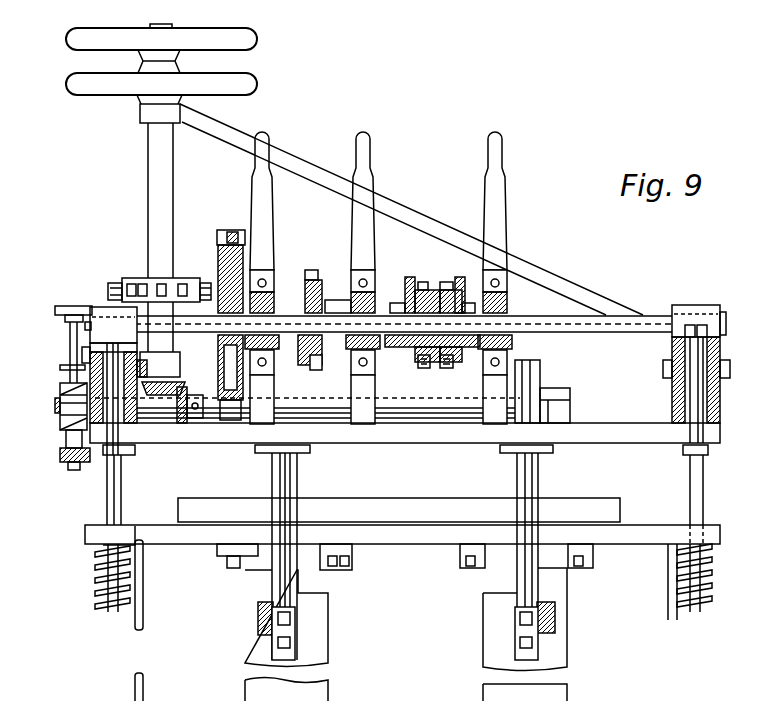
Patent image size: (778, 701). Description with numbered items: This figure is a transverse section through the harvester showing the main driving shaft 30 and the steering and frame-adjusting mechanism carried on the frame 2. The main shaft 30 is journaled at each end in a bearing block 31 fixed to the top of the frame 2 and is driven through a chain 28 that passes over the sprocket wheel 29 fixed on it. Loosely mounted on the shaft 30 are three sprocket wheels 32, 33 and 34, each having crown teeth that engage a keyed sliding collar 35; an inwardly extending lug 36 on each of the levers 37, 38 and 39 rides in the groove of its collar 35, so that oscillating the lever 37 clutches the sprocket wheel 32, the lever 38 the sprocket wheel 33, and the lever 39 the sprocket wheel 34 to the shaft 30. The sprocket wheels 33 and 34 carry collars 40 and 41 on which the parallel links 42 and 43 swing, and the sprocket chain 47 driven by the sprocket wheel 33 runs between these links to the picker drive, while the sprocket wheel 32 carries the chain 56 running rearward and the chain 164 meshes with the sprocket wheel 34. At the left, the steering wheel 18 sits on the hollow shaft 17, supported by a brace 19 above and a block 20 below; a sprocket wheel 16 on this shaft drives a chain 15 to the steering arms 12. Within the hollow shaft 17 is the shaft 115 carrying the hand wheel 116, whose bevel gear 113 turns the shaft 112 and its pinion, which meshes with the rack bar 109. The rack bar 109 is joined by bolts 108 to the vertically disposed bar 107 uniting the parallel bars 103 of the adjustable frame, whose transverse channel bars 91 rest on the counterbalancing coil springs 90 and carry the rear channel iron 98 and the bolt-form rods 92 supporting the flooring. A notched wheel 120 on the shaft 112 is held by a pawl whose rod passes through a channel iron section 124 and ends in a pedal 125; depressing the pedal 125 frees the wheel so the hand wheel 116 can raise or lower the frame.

The frame 2 is at (722, 403).
The arm 12 is at (405, 562).
The chain 15 is at (112, 282).
The sprocket wheel 16 is at (178, 278).
The hollow shaft 17 is at (147, 183).
The steering wheel 18 is at (258, 89).
The brace 19 is at (303, 159).
The block 20 is at (176, 357).
The chain 28 is at (221, 230).
The sprocket wheel 29 is at (218, 265).
The main shaft 30 is at (405, 337).
The bearing block 31 is at (691, 305).
The sprocket wheel 32 is at (333, 300).
The sprocket wheel 33 is at (422, 277).
The sprocket wheel 34 is at (452, 372).
The collar 35 is at (470, 288).
The lug 36 is at (542, 246).
The lever 37 is at (264, 197).
The lever 38 is at (357, 208).
The lever 39 is at (506, 205).
The collar 40 is at (398, 349).
The collar 41 is at (508, 352).
The parallel link 42 is at (455, 362).
The parallel link 43 is at (432, 329).
The sprocket chain 47 is at (431, 377).
The chain 56 is at (310, 272).
The coil spring 90 is at (95, 573).
The channel bar 91 is at (712, 527).
The rod 92 is at (143, 682).
The channel iron 98 is at (397, 507).
The parallel bar 103 is at (556, 615).
The vertically disposed bar 107 is at (567, 649).
The bolt 108 is at (519, 646).
The rack bar 109 is at (538, 490).
The shaft 112 is at (320, 402).
The bevel gear 113 is at (182, 425).
The shaft 115 is at (184, 389).
The hand wheel 116 is at (259, 40).
The notched wheel 120 is at (60, 425).
The channel iron section 124 is at (60, 368).
The pedal 125 is at (56, 310).
The chain 164 is at (450, 277).